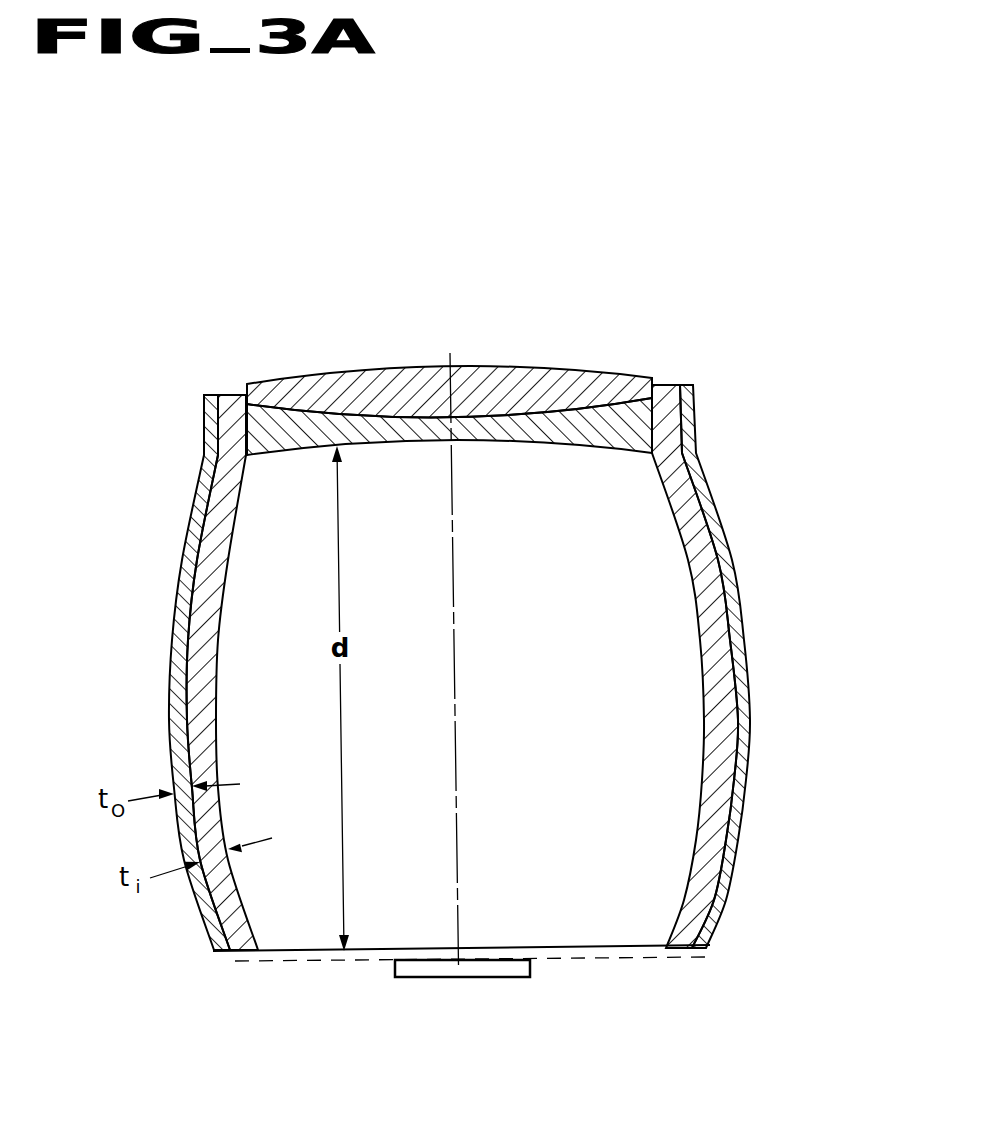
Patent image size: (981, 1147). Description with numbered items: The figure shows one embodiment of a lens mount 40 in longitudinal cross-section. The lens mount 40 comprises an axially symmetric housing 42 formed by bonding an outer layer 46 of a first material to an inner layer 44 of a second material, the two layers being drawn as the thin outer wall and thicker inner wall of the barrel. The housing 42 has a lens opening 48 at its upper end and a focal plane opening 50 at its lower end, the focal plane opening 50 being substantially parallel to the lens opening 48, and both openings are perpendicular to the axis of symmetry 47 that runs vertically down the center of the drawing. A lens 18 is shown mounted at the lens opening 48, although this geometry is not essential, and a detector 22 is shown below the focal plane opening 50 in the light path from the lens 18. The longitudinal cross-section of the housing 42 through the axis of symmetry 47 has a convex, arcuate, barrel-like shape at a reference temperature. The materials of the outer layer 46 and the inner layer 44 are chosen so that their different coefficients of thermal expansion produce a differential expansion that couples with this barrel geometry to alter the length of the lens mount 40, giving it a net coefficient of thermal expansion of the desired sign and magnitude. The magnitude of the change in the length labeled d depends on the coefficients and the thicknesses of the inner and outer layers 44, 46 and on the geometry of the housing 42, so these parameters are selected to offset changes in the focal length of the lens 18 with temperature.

The lens 18 is at (507, 413).
The detector 22 is at (485, 978).
The lens mount 40 is at (706, 360).
The axially symmetric housing 42 is at (185, 558).
The inner layer 44 is at (716, 662).
The outer layer 46 is at (731, 612).
The axis of symmetry 47 is at (457, 620).
The lens opening 48 is at (300, 377).
The focal plane opening 50 is at (308, 985).